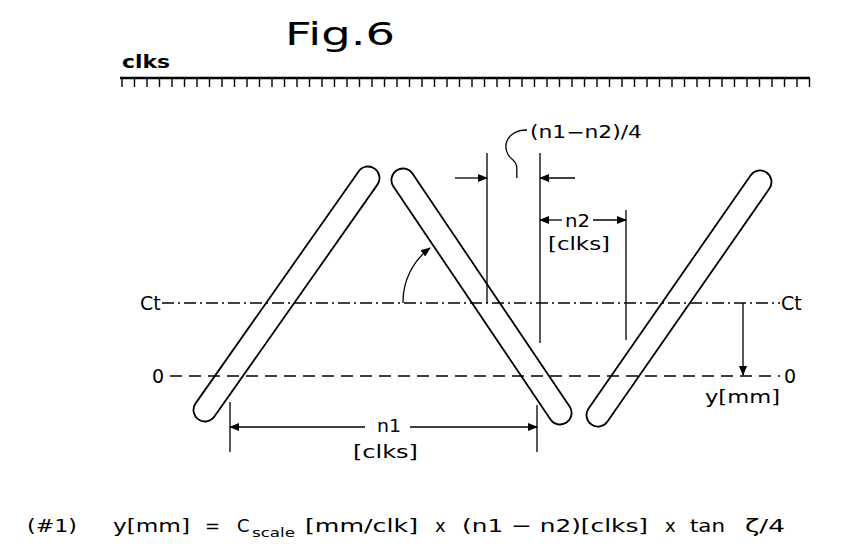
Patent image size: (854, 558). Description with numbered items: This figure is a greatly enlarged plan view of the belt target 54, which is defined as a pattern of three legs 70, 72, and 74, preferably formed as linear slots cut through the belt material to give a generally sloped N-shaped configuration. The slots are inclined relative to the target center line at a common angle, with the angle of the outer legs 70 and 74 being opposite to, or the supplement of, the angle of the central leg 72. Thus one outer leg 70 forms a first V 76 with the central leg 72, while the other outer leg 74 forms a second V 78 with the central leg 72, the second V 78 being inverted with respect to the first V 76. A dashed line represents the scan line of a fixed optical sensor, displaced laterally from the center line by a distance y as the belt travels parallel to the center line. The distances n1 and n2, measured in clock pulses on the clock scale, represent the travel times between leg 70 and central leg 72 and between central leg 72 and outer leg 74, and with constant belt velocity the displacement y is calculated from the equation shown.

The target 54 is at (298, 207).
The outer leg 70 is at (289, 272).
The central leg 72 is at (507, 333).
The outer leg 74 is at (736, 212).
The first V 76 is at (397, 244).
The second V 78 is at (592, 350).